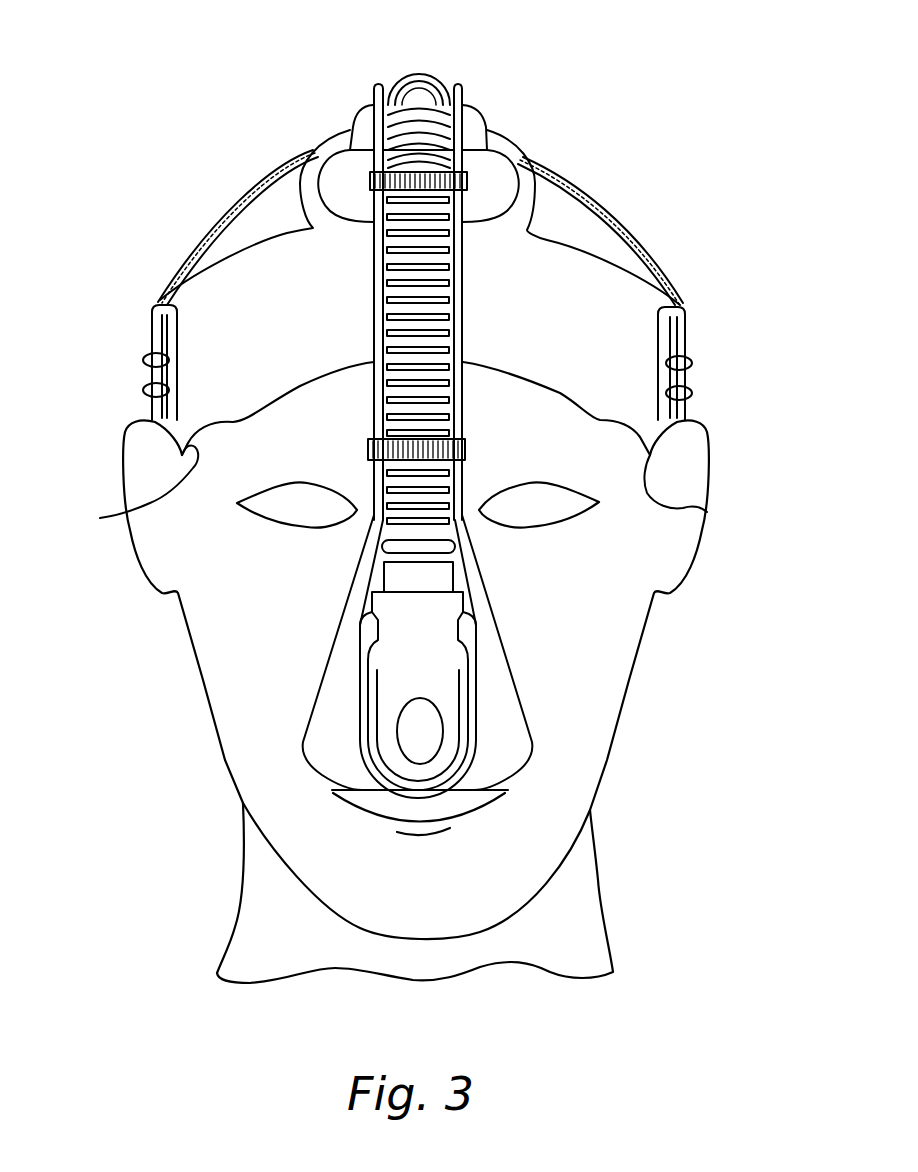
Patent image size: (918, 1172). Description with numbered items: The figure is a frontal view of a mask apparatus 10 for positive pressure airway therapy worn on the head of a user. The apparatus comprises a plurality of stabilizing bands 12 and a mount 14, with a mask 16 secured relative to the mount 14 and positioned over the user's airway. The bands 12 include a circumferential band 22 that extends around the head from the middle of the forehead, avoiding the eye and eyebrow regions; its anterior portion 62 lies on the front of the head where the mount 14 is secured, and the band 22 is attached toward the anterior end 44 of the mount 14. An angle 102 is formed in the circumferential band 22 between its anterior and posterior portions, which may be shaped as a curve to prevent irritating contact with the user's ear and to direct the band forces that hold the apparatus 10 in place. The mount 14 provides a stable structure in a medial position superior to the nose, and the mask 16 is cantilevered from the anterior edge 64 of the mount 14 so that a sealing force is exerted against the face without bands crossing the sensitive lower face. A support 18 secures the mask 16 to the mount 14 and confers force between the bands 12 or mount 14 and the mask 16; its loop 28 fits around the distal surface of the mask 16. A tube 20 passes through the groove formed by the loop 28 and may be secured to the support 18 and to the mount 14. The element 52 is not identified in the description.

The mask apparatus 10 is at (540, 92).
The stabilizing bands 12 is at (442, 275).
The mount 14 is at (360, 132).
The mask 16 is at (439, 696).
The support 18 is at (372, 83).
The tube 20 is at (428, 72).
The circumferential band 22 is at (617, 288).
The loop 28 is at (460, 787).
The anterior end 44 is at (350, 190).
The top strap 52 is at (527, 185).
The anterior portion 62 is at (290, 293).
The anterior edge 64 is at (463, 220).
The angle 102 is at (100, 519).